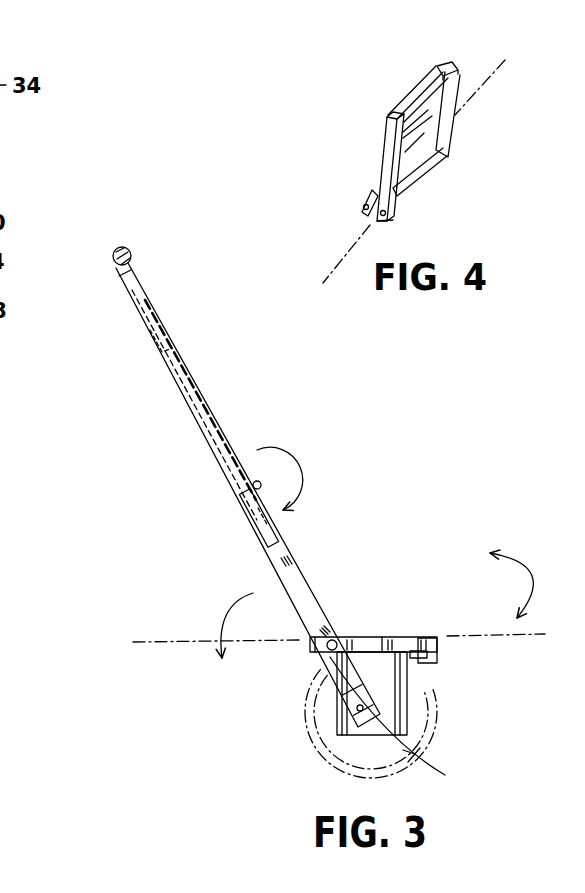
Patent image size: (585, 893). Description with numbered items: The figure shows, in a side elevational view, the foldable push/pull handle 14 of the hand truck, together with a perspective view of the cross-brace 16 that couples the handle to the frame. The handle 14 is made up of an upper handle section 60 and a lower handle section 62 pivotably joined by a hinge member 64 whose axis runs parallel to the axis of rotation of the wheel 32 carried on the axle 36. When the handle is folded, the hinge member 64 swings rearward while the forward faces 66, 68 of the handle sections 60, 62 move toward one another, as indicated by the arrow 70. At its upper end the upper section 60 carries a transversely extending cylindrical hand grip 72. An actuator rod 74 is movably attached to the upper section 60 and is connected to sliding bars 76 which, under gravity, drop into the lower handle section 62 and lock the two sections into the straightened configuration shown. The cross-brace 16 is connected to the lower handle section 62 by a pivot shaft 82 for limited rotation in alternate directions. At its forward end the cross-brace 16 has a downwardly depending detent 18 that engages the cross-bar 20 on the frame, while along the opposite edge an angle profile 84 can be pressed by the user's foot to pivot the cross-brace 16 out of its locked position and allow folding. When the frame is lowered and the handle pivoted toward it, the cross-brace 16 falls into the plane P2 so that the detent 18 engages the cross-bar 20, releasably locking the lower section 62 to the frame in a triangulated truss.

In FIG. 3, the foldable push/pull handle 14 is at (213, 470).
In FIG. 4, the cross-brace 16 is at (380, 140).
In FIG. 3, the cross-brace 16 is at (413, 640).
In FIG. 4, the detent 18 is at (460, 73).
In FIG. 3, the detent 18 is at (437, 652).
In FIG. 3, the cross-bar 20 is at (427, 658).
In FIG. 3, the wheel 32 is at (308, 737).
In FIG. 3, the axle 36 is at (403, 722).
In FIG. 3, the upper handle section 60 is at (133, 270).
In FIG. 3, the lower handle section 62 is at (277, 556).
In FIG. 3, the hinge member 64 is at (238, 460).
In FIG. 3, the forward face 66 is at (158, 313).
In FIG. 3, the forward face 68 is at (300, 570).
In FIG. 3, the arrow 70 is at (298, 455).
In FIG. 3, the hand grip 72 is at (119, 247).
In FIG. 3, the actuator rod 74 is at (133, 290).
In FIG. 3, the sliding bars 76 is at (163, 353).
In FIG. 4, the pivot shaft 82 is at (420, 167).
In FIG. 3, the pivot shaft 82 is at (333, 633).
In FIG. 4, the angle profile 84 is at (363, 202).
In FIG. 3, the angle profile 84 is at (302, 628).
In FIG. 3, the plane P2 is at (150, 636).